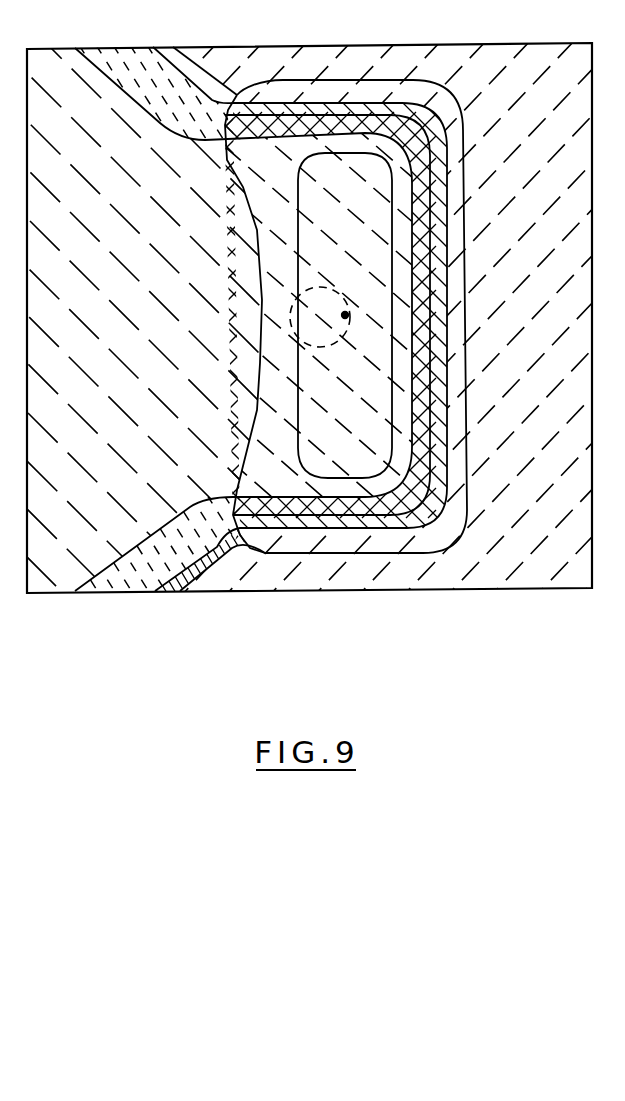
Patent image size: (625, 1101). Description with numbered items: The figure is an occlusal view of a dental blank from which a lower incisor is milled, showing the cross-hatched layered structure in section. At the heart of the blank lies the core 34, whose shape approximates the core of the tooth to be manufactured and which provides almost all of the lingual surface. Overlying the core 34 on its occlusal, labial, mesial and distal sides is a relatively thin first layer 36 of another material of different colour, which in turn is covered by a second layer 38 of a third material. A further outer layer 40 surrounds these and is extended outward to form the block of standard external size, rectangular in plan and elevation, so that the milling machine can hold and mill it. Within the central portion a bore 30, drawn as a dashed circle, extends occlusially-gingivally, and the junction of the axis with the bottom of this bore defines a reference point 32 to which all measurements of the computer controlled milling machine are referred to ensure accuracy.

The bore 30 is at (290, 320).
The reference point 32 is at (346, 313).
The core portion 34 is at (61, 83).
The first layer 36 is at (125, 63).
The second layer 38 is at (174, 63).
The outer layer 40 is at (236, 63).